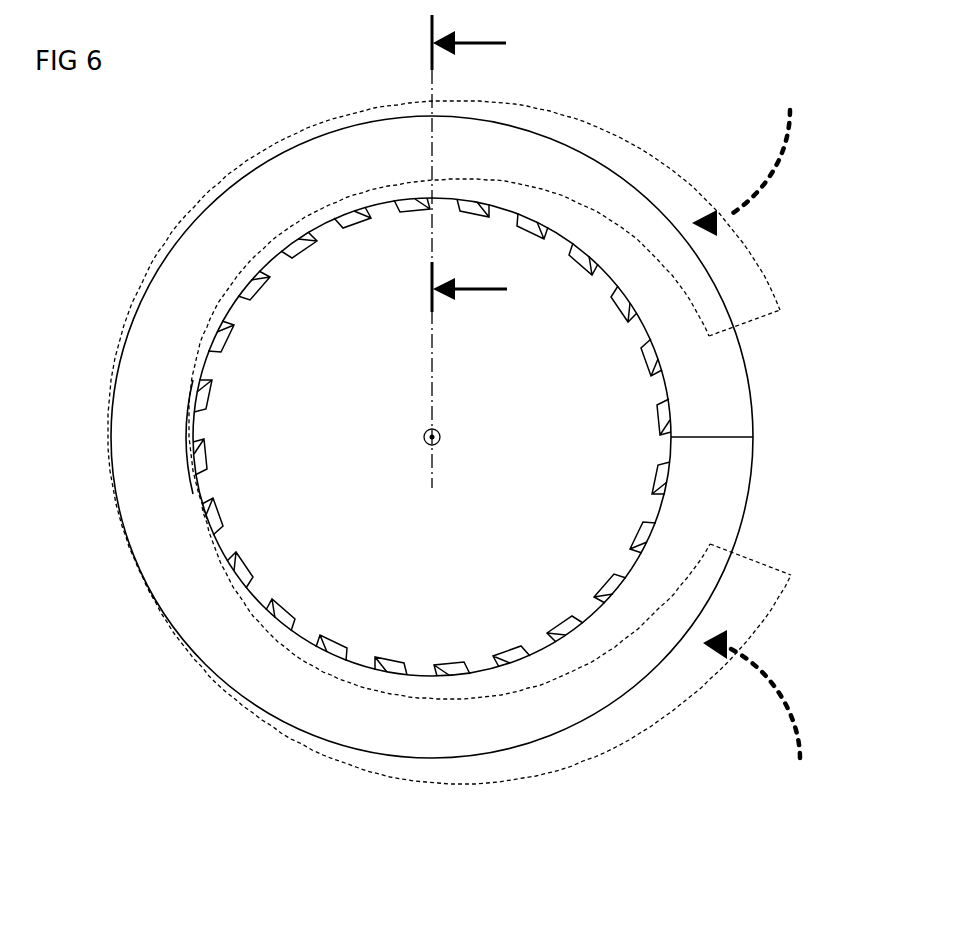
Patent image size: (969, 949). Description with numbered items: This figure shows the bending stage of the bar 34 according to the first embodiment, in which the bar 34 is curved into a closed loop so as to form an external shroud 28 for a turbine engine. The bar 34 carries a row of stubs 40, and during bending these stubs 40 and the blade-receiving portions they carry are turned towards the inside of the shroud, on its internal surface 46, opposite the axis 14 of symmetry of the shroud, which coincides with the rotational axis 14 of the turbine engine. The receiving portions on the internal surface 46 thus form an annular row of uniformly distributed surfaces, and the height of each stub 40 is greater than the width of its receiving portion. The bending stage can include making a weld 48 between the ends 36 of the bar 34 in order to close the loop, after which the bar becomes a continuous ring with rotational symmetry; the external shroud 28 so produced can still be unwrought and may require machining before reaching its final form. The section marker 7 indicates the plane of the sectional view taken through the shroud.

The section line for FIG. 7 is at (469, 159).
The axis of symmetry 14 is at (440, 437).
The external shroud 28 is at (690, 383).
The bar 34 is at (662, 180).
The ends of the bar 36 is at (764, 318).
The stubs 40 is at (310, 237).
The internal surface 46 is at (193, 421).
The weld 48 is at (723, 437).